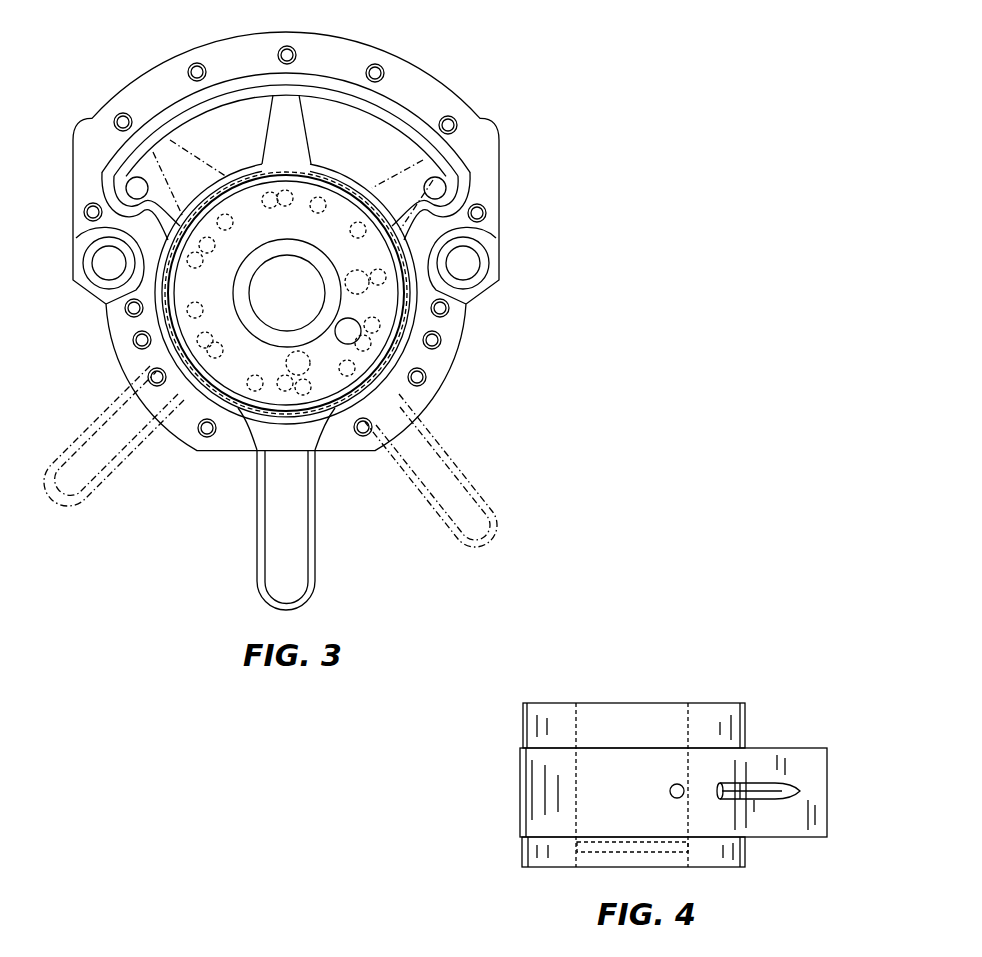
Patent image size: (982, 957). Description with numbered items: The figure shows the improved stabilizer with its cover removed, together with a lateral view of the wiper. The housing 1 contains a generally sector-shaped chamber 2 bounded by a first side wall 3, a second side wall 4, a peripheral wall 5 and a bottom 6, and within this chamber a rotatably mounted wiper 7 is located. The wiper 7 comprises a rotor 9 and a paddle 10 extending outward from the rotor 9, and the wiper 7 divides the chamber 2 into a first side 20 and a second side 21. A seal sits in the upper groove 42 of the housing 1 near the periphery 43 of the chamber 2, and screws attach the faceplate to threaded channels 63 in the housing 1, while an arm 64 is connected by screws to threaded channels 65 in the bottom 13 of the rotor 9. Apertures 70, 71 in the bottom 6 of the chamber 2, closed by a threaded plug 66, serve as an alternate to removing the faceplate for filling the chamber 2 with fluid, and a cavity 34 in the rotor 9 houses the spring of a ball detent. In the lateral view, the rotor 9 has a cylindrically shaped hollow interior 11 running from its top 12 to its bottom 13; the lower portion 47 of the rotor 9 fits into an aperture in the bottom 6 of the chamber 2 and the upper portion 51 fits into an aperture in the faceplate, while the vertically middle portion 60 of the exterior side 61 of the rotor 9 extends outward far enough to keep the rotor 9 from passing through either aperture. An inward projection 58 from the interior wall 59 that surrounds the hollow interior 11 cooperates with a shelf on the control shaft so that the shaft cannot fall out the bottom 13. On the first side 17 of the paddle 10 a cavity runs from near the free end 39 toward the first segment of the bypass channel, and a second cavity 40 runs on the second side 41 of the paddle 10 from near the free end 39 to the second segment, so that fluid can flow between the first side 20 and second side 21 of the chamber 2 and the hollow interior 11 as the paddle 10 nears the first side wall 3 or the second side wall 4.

In FIG. 3, the housing 1 is at (435, 363).
In FIG. 3, the chamber 2 is at (365, 142).
In FIG. 3, the first side wall 3 is at (115, 297).
In FIG. 3, the second side wall 4 is at (447, 252).
In FIG. 3, the peripheral wall 5 is at (187, 125).
In FIG. 4, the peripheral wall 5 is at (505, 792).
In FIG. 3, the bottom 6 is at (357, 117).
In FIG. 3, the wiper 7 is at (292, 118).
In FIG. 4, the wiper 7 is at (410, 800).
In FIG. 3, the rotor 9 is at (323, 377).
In FIG. 3, the paddle 10 is at (278, 130).
In FIG. 4, the paddle 10 is at (797, 767).
In FIG. 3, the hollow interior 11 is at (272, 268).
In FIG. 4, the hollow interior 11 is at (638, 715).
In FIG. 4, the top 12 is at (552, 702).
In FIG. 4, the bottom 13 is at (535, 867).
In FIG. 3, the first side 17 is at (268, 137).
In FIG. 3, the first side 20 is at (218, 118).
In FIG. 3, the second side 21 is at (325, 110).
In FIG. 3, the cavity 34 is at (347, 333).
In FIG. 3, the free end 39 is at (280, 135).
In FIG. 4, the free end 39 is at (827, 777).
In FIG. 4, the second cavity 40 is at (743, 795).
In FIG. 3, the second side 41 is at (312, 135).
In FIG. 4, the second side 41 is at (777, 798).
In FIG. 3, the upper groove 42 is at (417, 127).
In FIG. 3, the periphery 43 is at (388, 127).
In FIG. 4, the lower portion 47 is at (528, 857).
In FIG. 4, the upper portion 51 is at (526, 710).
In FIG. 3, the inward projection 58 is at (238, 290).
In FIG. 4, the inward projection 58 is at (583, 848).
In FIG. 4, the interior wall 59 is at (577, 737).
In FIG. 4, the vertically middle portion 60 is at (522, 730).
In FIG. 4, the exterior side 61 is at (520, 772).
In FIG. 3, the threaded channels 63 is at (85, 210).
In FIG. 3, the arm 64 is at (287, 500).
In FIG. 3, the threaded channels 65 is at (212, 247).
In FIG. 4, the threaded plug 66 is at (678, 784).
In FIG. 3, the aperture 70 is at (138, 188).
In FIG. 3, the aperture 71 is at (438, 188).